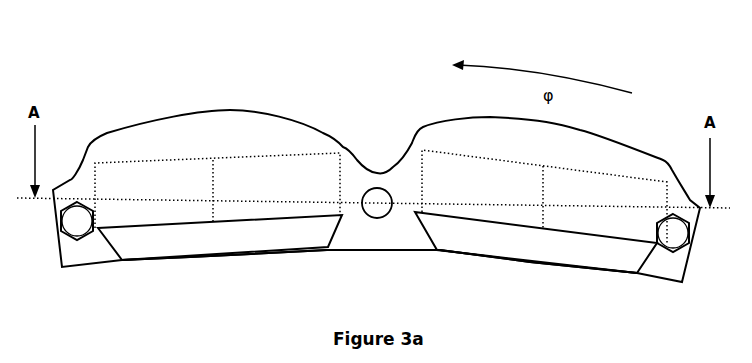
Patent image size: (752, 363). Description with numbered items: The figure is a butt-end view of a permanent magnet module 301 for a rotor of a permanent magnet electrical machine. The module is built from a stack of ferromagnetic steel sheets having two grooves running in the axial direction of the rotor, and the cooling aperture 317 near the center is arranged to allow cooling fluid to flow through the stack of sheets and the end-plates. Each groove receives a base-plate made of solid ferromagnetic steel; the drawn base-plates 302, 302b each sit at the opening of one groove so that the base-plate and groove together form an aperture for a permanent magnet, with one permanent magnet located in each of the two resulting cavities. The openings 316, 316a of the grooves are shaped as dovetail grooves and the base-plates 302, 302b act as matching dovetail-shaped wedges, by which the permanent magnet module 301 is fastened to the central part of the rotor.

The permanent magnet module 301 is at (324, 96).
The aperture 317 is at (378, 197).
The base-plate 302 is at (218, 206).
The magnet 302b is at (541, 211).
The opening of the groove 316 is at (229, 262).
The opening of the groove 316a is at (477, 258).